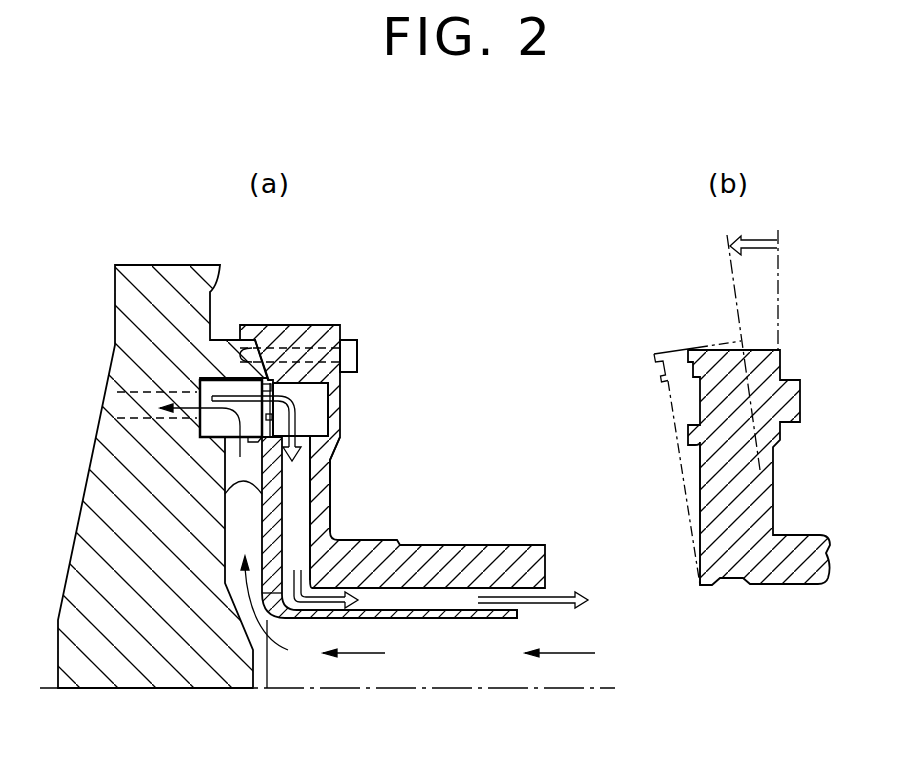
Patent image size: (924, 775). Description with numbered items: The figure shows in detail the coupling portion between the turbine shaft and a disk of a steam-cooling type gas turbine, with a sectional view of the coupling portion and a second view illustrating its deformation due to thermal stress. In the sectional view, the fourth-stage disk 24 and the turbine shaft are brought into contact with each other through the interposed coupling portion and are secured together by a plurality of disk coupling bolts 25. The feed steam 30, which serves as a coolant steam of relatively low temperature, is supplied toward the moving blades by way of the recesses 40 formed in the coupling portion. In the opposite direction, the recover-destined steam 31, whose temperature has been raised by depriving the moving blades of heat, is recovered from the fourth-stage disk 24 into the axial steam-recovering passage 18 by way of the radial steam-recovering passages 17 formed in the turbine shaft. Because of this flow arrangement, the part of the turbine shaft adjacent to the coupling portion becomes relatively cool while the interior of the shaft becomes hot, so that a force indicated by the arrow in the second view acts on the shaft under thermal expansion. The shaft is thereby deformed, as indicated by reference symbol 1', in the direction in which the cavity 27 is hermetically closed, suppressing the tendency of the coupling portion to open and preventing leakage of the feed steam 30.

The deformed turbine shaft 1' is at (694, 431).
The radial steam-recovering passages 17 is at (340, 482).
The axial steam-recovering passage 18 is at (420, 603).
The fourth-stage disk 24 is at (130, 683).
The disk coupling bolts 25 is at (347, 357).
The cavity 27 is at (258, 683).
The feed steam 30 is at (478, 653).
The recover-destined steam 31 is at (459, 591).
The recesses 40 is at (238, 457).